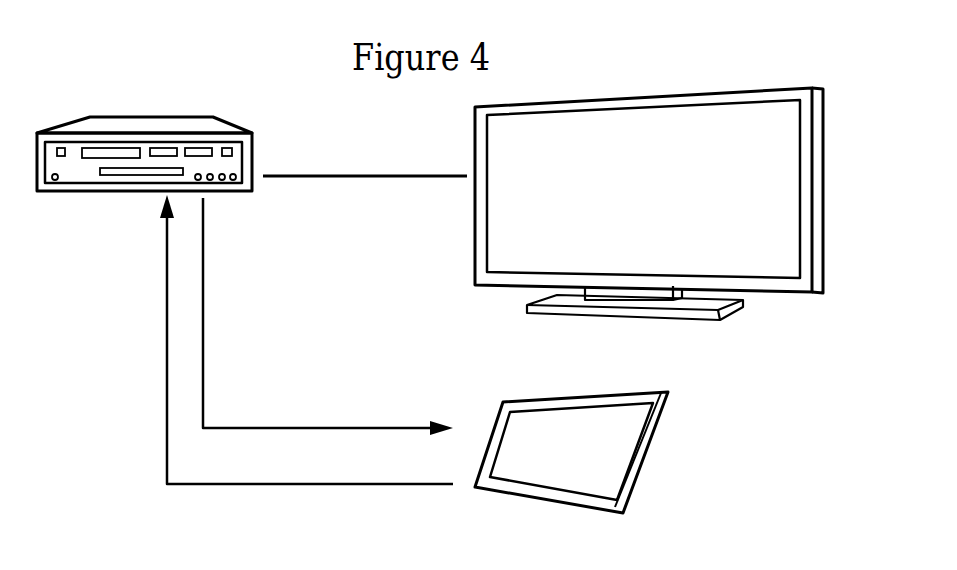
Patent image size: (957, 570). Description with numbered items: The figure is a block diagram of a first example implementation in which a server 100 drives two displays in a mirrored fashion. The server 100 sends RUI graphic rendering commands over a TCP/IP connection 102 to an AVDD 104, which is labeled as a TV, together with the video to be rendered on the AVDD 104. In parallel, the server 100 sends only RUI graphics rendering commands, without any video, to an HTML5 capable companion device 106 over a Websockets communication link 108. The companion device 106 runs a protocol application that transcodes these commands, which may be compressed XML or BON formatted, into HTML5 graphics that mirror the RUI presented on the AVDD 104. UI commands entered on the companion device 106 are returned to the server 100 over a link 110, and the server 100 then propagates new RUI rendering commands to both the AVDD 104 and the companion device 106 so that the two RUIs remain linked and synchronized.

The server 100 is at (253, 147).
The TCP/IP connection 102 is at (387, 175).
The AVDD 104 is at (824, 117).
The HTML5 capable companion device 106 is at (667, 413).
The Websockets communication link 108 is at (204, 336).
The link 110 is at (165, 452).